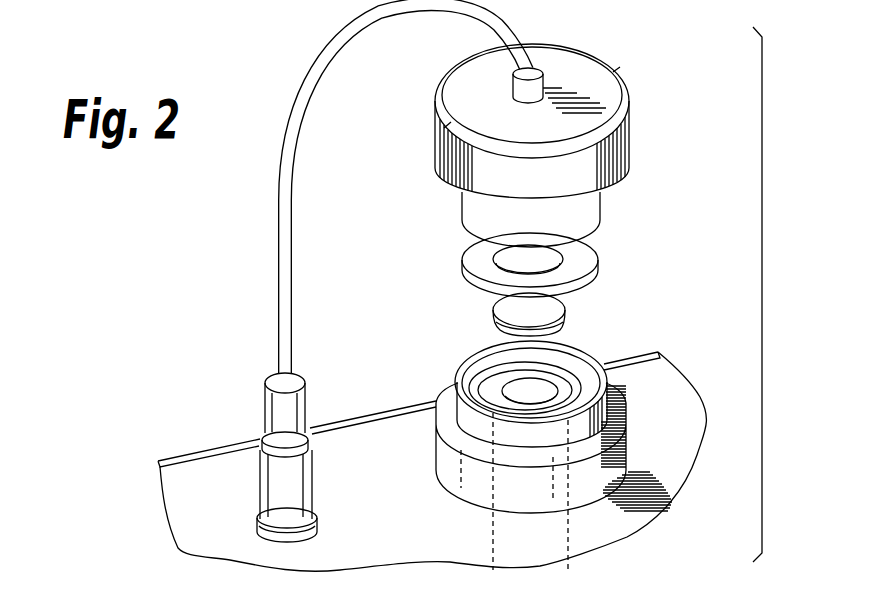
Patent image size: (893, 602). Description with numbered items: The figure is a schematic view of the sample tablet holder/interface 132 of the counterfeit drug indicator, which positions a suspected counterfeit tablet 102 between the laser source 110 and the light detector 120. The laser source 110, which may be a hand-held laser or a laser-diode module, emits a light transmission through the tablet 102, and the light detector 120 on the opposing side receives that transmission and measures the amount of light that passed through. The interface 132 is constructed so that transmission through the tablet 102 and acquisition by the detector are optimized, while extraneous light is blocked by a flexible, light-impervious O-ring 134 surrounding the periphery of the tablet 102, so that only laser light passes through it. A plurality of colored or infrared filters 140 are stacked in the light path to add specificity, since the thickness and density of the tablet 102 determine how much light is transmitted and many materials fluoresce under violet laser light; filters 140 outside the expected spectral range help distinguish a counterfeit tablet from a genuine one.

The light detector 120 is at (630, 108).
The filters 140 is at (585, 212).
The O-ring 134 is at (587, 260).
The tablet 102 is at (565, 317).
The laser source 110 is at (510, 540).
The sample tablet holder/interface 132 is at (778, 263).